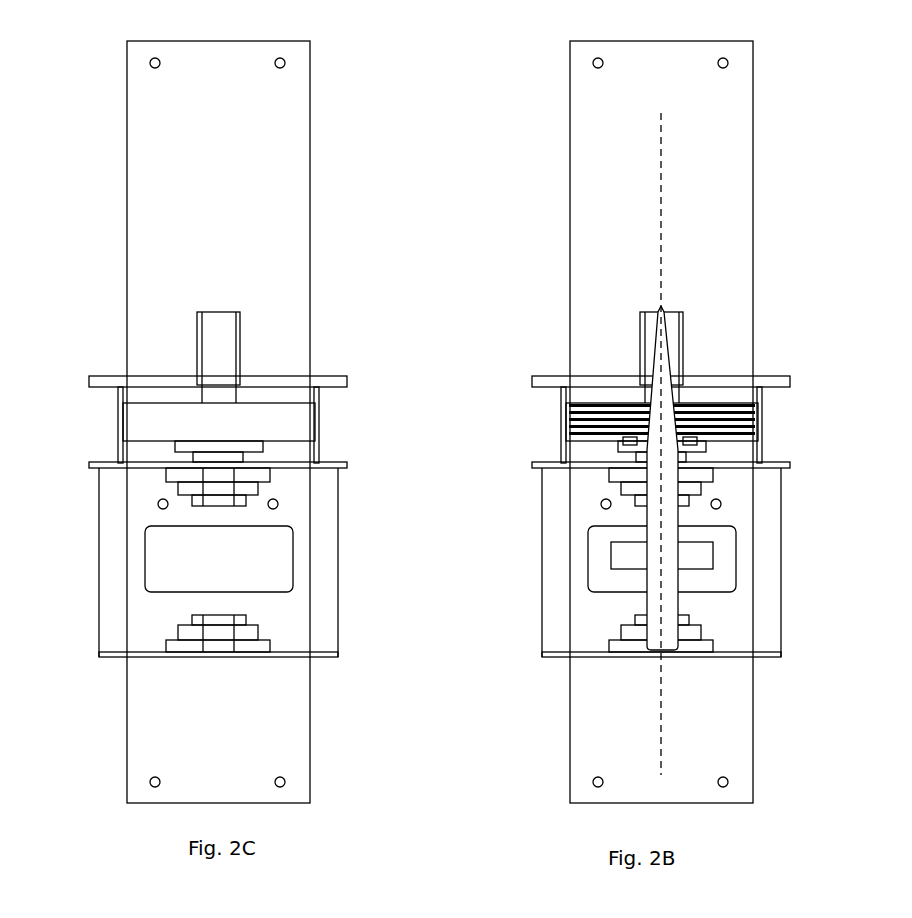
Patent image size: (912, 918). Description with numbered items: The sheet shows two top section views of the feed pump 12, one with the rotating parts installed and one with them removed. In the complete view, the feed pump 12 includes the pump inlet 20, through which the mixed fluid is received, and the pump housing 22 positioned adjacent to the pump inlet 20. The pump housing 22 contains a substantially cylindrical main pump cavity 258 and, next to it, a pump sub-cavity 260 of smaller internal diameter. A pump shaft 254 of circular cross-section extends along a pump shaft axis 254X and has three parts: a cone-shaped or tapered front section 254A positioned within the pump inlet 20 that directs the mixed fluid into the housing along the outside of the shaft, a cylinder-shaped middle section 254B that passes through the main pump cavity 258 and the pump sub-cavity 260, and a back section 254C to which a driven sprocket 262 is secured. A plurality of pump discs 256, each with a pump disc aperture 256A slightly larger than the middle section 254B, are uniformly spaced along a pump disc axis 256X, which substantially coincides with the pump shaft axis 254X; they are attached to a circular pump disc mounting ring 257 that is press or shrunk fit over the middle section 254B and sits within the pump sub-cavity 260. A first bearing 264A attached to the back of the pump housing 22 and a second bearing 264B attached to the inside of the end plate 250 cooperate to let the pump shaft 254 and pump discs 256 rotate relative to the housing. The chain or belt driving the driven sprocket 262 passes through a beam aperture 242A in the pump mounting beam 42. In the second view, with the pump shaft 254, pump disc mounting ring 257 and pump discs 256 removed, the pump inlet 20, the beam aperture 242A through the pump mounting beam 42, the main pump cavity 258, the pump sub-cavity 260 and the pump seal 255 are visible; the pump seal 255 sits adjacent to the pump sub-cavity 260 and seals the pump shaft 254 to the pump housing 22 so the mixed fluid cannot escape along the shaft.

In FIG. 2C, the feed pump 12 is at (218, 376).
In FIG. 2B, the feed pump 12 is at (659, 274).
In FIG. 2C, the pump inlet 20 is at (220, 310).
In FIG. 2B, the pump inlet 20 is at (657, 308).
In FIG. 2C, the pump housing 22 is at (325, 425).
In FIG. 2B, the pump housing 22 is at (560, 419).
In FIG. 2C, the pump mounting beam 42 is at (298, 740).
In FIG. 2B, the pump mounting beam 42 is at (582, 753).
In FIG. 2C, the beam aperture 242A is at (280, 547).
In FIG. 2B, the beam aperture 242A is at (595, 547).
In FIG. 2B, the end plate 250 is at (654, 631).
In FIG. 2B, the pump shaft 254 is at (664, 450).
In FIG. 2B, the front section 254A is at (662, 352).
In FIG. 2B, the middle section 254B is at (660, 417).
In FIG. 2B, the back section 254C is at (663, 531).
In FIG. 2B, the pump shaft axis 254X is at (663, 192).
In FIG. 2C, the pump seal 255 is at (217, 456).
In FIG. 2B, the pump discs 256 is at (725, 371).
In FIG. 2B, the pump disc aperture 256A is at (680, 420).
In FIG. 2B, the pump disc axis 256X is at (663, 265).
In FIG. 2B, the pump disc mounting ring 257 is at (713, 443).
In FIG. 2C, the main pump cavity 258 is at (138, 422).
In FIG. 2B, the main pump cavity 258 is at (585, 397).
In FIG. 2C, the pump sub-cavity 260 is at (187, 445).
In FIG. 2B, the driven sprocket 262 is at (708, 554).
In FIG. 2B, the first bearing 264A is at (698, 477).
In FIG. 2B, the second bearing 264B is at (697, 638).